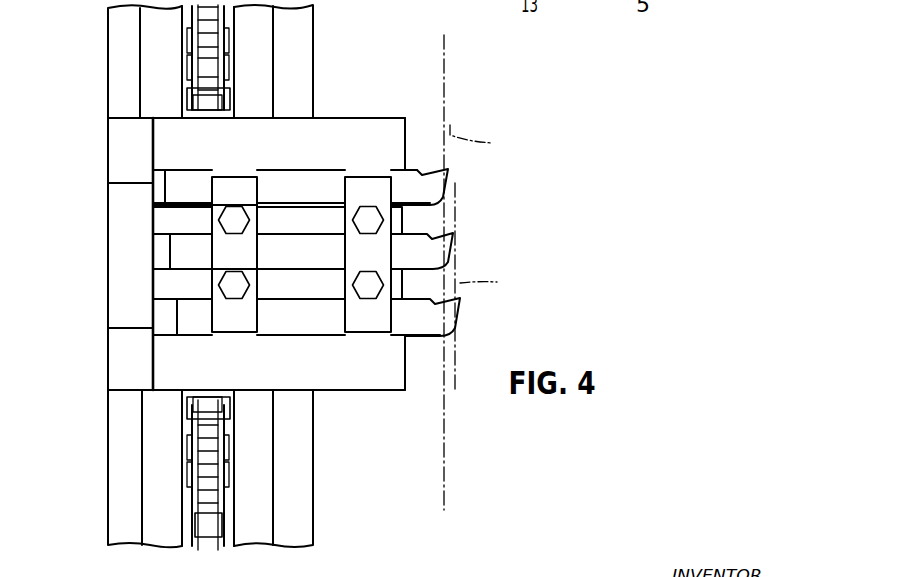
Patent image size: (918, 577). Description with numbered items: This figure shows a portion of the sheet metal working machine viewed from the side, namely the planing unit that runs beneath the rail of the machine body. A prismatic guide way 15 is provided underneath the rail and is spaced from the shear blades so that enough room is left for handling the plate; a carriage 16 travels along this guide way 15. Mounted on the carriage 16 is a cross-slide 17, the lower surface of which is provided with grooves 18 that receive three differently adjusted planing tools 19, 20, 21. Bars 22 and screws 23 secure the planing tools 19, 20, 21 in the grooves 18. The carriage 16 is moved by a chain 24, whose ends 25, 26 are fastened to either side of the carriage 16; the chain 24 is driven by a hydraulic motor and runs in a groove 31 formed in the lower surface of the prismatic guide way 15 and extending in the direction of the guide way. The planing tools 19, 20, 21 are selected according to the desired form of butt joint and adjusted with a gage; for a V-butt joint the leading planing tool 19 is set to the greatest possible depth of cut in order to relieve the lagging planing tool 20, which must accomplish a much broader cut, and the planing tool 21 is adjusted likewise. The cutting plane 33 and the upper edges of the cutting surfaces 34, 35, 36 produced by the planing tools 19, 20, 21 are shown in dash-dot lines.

The prismatic guide way 15 is at (117, 32).
The carriage 16 is at (118, 162).
The cross-slide 17 is at (350, 133).
The grooves 18 is at (153, 205).
The planing tool 19 is at (175, 190).
The planing tool 20 is at (187, 247).
The planing tool 21 is at (190, 317).
The bars 22 is at (382, 322).
The screws 23 is at (365, 292).
The chain 24 is at (208, 528).
The chain end 25 is at (203, 98).
The chain end 26 is at (207, 415).
The groove 31 is at (190, 490).
The cutting plane 33 is at (444, 55).
The upper edge of cutting surface 34 is at (484, 142).
The upper edge of cutting surface 35 is at (455, 217).
The upper edge of cutting surface 36 is at (491, 284).